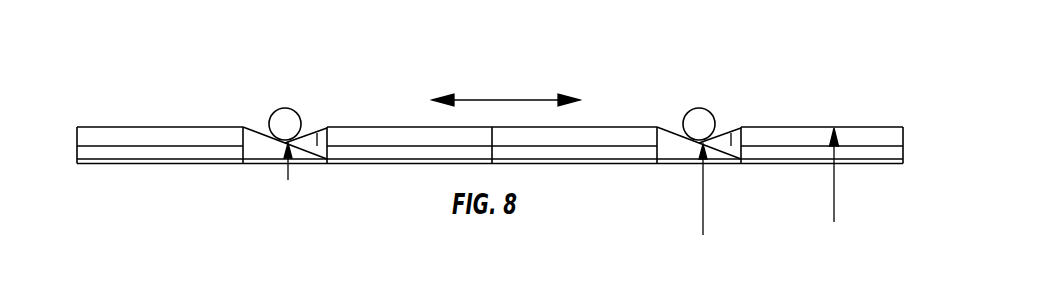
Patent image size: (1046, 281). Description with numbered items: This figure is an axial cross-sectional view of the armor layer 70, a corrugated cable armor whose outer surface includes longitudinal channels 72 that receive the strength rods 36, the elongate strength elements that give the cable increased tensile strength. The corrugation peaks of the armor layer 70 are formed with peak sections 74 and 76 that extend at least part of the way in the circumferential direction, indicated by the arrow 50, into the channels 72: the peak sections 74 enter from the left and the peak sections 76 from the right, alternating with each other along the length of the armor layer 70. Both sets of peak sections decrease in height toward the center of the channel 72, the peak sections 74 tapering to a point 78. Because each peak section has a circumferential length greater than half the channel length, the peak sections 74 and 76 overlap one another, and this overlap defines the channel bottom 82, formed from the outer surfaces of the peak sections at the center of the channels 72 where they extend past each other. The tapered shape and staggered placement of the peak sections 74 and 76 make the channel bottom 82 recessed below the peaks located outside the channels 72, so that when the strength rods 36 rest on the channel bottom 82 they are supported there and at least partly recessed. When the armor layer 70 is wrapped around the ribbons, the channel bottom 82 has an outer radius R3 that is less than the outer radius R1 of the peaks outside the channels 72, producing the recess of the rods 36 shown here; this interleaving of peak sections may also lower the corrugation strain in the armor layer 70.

The strength rods 36 is at (288, 120).
The arrow representing the circumferential direction 50 is at (518, 98).
The armor layer 70 is at (877, 107).
The longitudinal channels 72 is at (308, 123).
The peak sections 74 is at (257, 150).
The peak sections 76 is at (318, 139).
The point 78 is at (320, 161).
The channel bottom 82 is at (288, 176).
The outer radius of peaks outside the channels R1 is at (834, 192).
The outer radius of channel bottom R3 is at (703, 203).